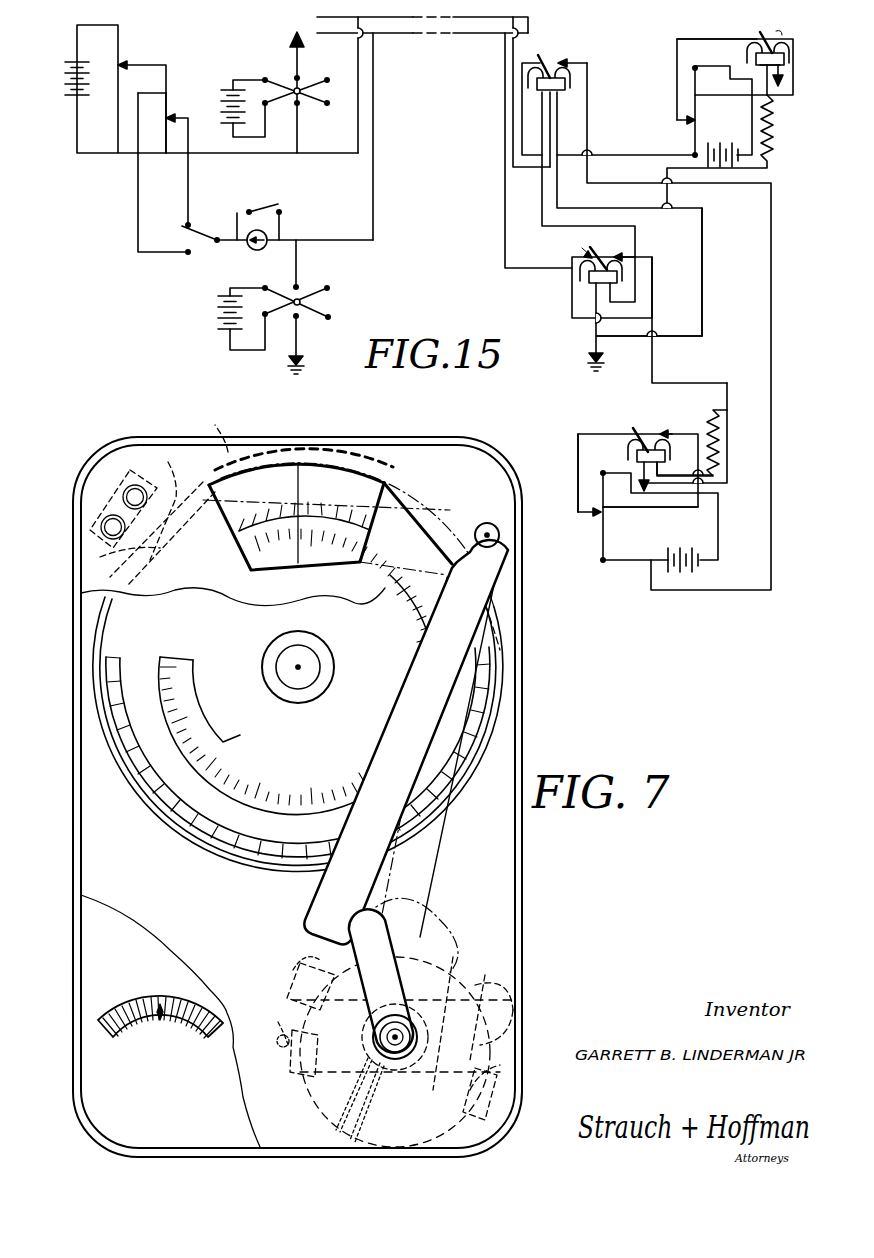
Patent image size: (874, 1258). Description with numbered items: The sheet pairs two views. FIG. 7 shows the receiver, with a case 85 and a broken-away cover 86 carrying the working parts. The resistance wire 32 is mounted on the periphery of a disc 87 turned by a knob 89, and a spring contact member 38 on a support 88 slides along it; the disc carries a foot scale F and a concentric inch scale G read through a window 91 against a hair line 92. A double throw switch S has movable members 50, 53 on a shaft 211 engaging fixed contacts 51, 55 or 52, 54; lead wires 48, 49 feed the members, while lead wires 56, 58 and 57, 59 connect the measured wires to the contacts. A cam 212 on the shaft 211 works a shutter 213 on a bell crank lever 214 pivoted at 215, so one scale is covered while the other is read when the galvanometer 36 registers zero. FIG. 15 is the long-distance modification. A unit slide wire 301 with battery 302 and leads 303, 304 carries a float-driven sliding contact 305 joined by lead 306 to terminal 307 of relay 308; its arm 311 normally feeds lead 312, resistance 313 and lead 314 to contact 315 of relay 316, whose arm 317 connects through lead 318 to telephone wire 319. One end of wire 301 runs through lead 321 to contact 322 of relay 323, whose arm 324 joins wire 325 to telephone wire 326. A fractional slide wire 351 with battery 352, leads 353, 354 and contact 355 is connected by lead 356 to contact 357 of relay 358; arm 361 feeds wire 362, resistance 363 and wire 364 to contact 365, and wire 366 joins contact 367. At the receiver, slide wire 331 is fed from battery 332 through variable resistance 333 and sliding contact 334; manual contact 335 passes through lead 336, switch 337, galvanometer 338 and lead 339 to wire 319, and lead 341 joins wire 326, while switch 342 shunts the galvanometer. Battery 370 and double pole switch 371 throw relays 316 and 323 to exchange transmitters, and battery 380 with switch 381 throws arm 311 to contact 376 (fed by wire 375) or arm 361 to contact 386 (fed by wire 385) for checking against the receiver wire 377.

In FIG. 15, the battery 332 is at (191, 89).
In FIG. 15, the variable resistance 333 is at (118, 102).
In FIG. 15, the sliding contact 334 is at (123, 58).
In FIG. 15, the receiver resistance wire 331 is at (166, 80).
In FIG. 15, the wire 377 is at (141, 114).
In FIG. 15, the sliding contact 335 is at (180, 110).
In FIG. 15, the lead wire 336 is at (190, 164).
In FIG. 15, the single pole switch 337 is at (212, 225).
In FIG. 15, the galvanometer 338 is at (262, 250).
In FIG. 15, the switch 342 is at (262, 208).
In FIG. 15, the lead wire 339 is at (340, 216).
In FIG. 15, the lead wire 341 is at (345, 160).
In FIG. 15, the battery 370 is at (243, 89).
In FIG. 15, the double pole switch 371 is at (307, 92).
In FIG. 15, the battery 380 is at (216, 319).
In FIG. 15, the double pole switch 381 is at (297, 307).
In FIG. 15, the telephone wire 326 is at (402, 20).
In FIG. 15, the telephone wire 319 is at (478, 36).
In FIG. 15, the wire 325 is at (513, 125).
In FIG. 15, the lead wire 318 is at (505, 235).
In FIG. 15, the relay contact 322 is at (541, 58).
In FIG. 15, the relay arm 324 is at (550, 66).
In FIG. 15, the relay contact 367 is at (566, 62).
In FIG. 15, the relay 323 is at (556, 92).
In FIG. 15, the lead wire 321 is at (607, 155).
In FIG. 15, the lead wire 304 is at (695, 153).
In FIG. 15, the sliding contact 305 is at (685, 122).
In FIG. 15, the lead wire 306 is at (677, 82).
In FIG. 15, the unit resistance wire 301 is at (697, 133).
In FIG. 15, the wire 375 is at (712, 95).
In FIG. 15, the battery 302 is at (731, 145).
In FIG. 15, the relay terminal 307 is at (757, 40).
In FIG. 15, the contact arm 311 is at (766, 38).
In FIG. 15, the relay contact 376 is at (795, 32).
In FIG. 15, the relay 308 is at (762, 64).
In FIG. 15, the lead wire 312 is at (773, 97).
In FIG. 15, the lead wire 303 is at (770, 125).
In FIG. 15, the resistance 313 is at (772, 143).
In FIG. 15, the wire 366 is at (772, 482).
In FIG. 15, the lead wire 314 is at (668, 262).
In FIG. 15, the relay contact 315 is at (596, 274).
In FIG. 15, the relay arm 317 is at (592, 246).
In FIG. 15, the relay contact 365 is at (621, 268).
In FIG. 15, the relay 316 is at (590, 283).
In FIG. 15, the wire 364 is at (652, 366).
In FIG. 15, the relay contact 386 is at (693, 413).
In FIG. 15, the resistance 363 is at (720, 445).
In FIG. 15, the relay contact 357 is at (630, 434).
In FIG. 15, the relay arm 361 is at (648, 432).
In FIG. 15, the relay 358 is at (637, 457).
In FIG. 15, the wire 362 is at (685, 472).
In FIG. 15, the wire 385 is at (650, 496).
In FIG. 15, the lead wire 356 is at (578, 472).
In FIG. 15, the sliding contact member 355 is at (594, 515).
In FIG. 15, the lead wire 353 is at (718, 528).
In FIG. 15, the slide wire 351 is at (603, 545).
In FIG. 15, the lead wire 354 is at (650, 552).
In FIG. 15, the battery 352 is at (684, 550).
In FIG. 7, the case 85 is at (522, 890).
In FIG. 7, the cover 86 is at (442, 480).
In FIG. 7, the cylinder or disc 87 is at (297, 672).
In FIG. 7, the support 88 is at (123, 490).
In FIG. 7, the knob 89 is at (334, 660).
In FIG. 7, the window 91 is at (332, 498).
In FIG. 7, the hair line 92 is at (298, 480).
In FIG. 7, the resistance wire 32 is at (162, 518).
In FIG. 7, the spring contact member 38 is at (100, 556).
In FIG. 7, the shutter 213 is at (209, 430).
In FIG. 7, the bell crank lever 214 is at (400, 880).
In FIG. 7, the pivot 215 is at (500, 548).
In FIG. 7, the cam member 212 is at (440, 1000).
In FIG. 7, the shaft 211 is at (418, 1035).
In FIG. 7, the galvanometer 36 is at (115, 1012).
In FIG. 7, the lead wire 48 is at (377, 1102).
In FIG. 7, the lead wire 49 is at (362, 1090).
In FIG. 7, the movable switch member 50 is at (440, 1070).
In FIG. 7, the switch contact 51 is at (500, 1080).
In FIG. 7, the switch contact 52 is at (513, 990).
In FIG. 7, the movable switch member 53 is at (280, 1010).
In FIG. 7, the switch contact 54 is at (298, 1075).
In FIG. 7, the switch contact 55 is at (290, 993).
In FIG. 7, the lead wire 56 is at (515, 1012).
In FIG. 7, the lead wire 57 is at (497, 1100).
In FIG. 7, the lead wire 58 is at (278, 1040).
In FIG. 7, the lead wire 59 is at (300, 960).
In FIG. 7, the foot scale F is at (165, 777).
In FIG. 7, the inch scale G is at (218, 701).
In FIG. 7, the double throw switch S is at (403, 1052).